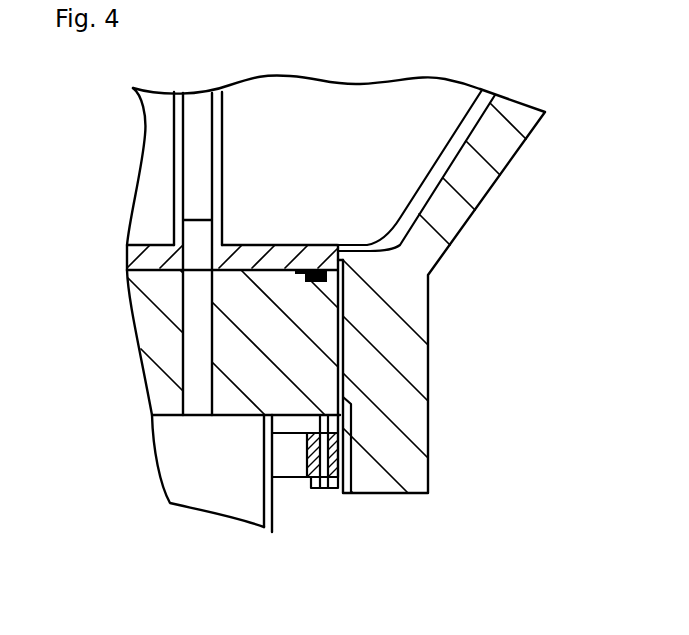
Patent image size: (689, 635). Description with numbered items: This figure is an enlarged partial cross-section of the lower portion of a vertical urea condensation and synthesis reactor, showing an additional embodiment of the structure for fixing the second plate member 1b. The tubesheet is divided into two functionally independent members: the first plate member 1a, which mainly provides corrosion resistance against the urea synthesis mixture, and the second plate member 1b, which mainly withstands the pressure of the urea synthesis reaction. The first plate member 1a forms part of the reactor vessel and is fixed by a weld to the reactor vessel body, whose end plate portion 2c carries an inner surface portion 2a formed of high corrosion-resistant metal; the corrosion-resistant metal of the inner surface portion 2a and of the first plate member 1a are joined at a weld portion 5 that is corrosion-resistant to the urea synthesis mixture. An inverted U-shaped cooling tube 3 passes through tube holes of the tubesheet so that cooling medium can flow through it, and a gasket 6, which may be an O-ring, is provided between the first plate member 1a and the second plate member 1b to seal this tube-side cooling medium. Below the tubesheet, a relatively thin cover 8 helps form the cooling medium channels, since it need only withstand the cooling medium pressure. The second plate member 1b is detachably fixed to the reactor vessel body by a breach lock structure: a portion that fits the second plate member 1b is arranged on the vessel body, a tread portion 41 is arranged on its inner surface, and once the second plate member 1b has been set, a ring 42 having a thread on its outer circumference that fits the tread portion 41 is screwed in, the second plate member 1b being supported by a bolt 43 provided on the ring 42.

The first plate member 1a is at (127, 261).
The second plate member 1b is at (134, 322).
The inner surface portion 2a is at (434, 172).
The end plate portion 2c is at (495, 187).
The cooling tube 3 is at (223, 110).
The weld portion 5 is at (338, 246).
The gasket 6 is at (311, 268).
The cover 8 is at (273, 531).
The tread portion 41 is at (344, 494).
The ring 42 is at (288, 468).
The bolt 43 is at (325, 489).